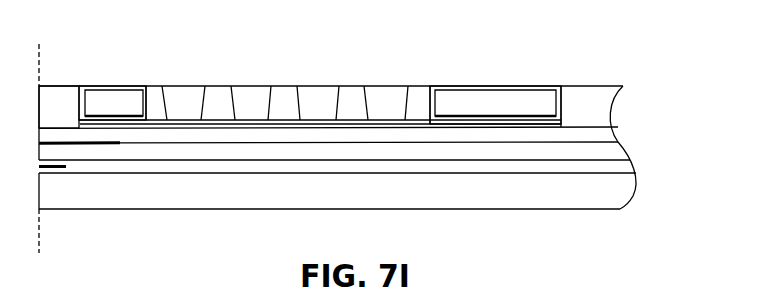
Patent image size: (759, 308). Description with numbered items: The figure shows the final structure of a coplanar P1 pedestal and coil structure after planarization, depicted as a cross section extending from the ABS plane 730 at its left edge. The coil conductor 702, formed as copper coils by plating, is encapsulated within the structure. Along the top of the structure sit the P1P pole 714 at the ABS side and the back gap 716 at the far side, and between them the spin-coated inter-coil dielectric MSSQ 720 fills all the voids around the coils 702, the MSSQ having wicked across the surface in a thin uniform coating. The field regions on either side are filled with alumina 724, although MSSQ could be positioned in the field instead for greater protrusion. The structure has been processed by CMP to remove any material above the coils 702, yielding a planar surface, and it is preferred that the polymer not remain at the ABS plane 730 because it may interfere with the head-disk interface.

The coil conductor 702 is at (252, 87).
The P1P pole 714 is at (50, 87).
The back gap 716 is at (587, 87).
The MSSQ 720 is at (355, 87).
The alumina 724 is at (113, 87).
The ABS plane 730 is at (40, 239).